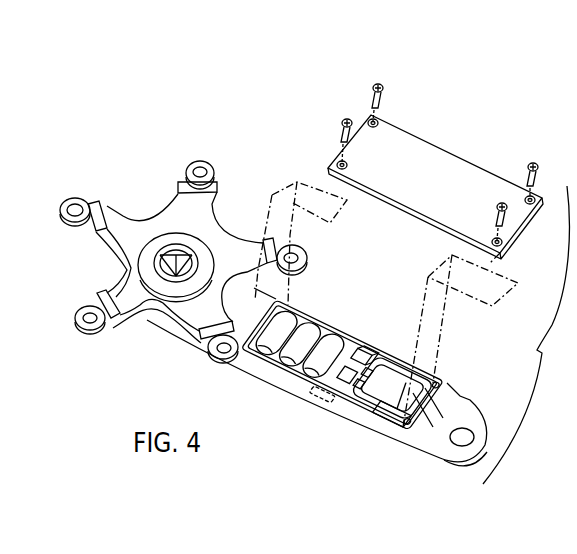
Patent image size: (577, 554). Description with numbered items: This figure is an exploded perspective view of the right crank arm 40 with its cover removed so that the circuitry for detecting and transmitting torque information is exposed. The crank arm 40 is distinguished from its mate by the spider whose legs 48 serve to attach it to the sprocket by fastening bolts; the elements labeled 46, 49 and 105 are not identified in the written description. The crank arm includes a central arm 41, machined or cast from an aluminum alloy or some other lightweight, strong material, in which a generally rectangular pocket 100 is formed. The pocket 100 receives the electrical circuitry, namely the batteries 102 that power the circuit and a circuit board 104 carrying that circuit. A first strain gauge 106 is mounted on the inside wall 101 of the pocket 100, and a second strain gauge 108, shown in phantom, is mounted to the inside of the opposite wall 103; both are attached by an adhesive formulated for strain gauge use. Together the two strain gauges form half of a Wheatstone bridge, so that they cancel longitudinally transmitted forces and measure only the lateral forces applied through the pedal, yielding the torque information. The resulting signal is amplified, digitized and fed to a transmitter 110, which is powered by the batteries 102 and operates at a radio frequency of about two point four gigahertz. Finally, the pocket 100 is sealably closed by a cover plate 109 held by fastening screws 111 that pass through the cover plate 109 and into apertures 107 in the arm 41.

The right crank arm 40 is at (325, 290).
The central arm 41 is at (237, 375).
The spider / hub member 46 is at (128, 200).
The legs 48 is at (102, 238).
The mounting lugs 49 is at (72, 199).
The pocket 100 is at (385, 350).
The inside wall 101 is at (400, 360).
The batteries 102 is at (267, 350).
The opposite wall 103 is at (378, 413).
The circuit board 104 is at (312, 378).
The housing base portion 105 is at (450, 400).
The first strain gauge 106 is at (343, 347).
The apertures 107 is at (442, 383).
The second strain gauge 108 is at (318, 410).
The cover plate 109 is at (448, 165).
The transmitter 110 is at (371, 428).
The fastening screws 111 is at (345, 118).